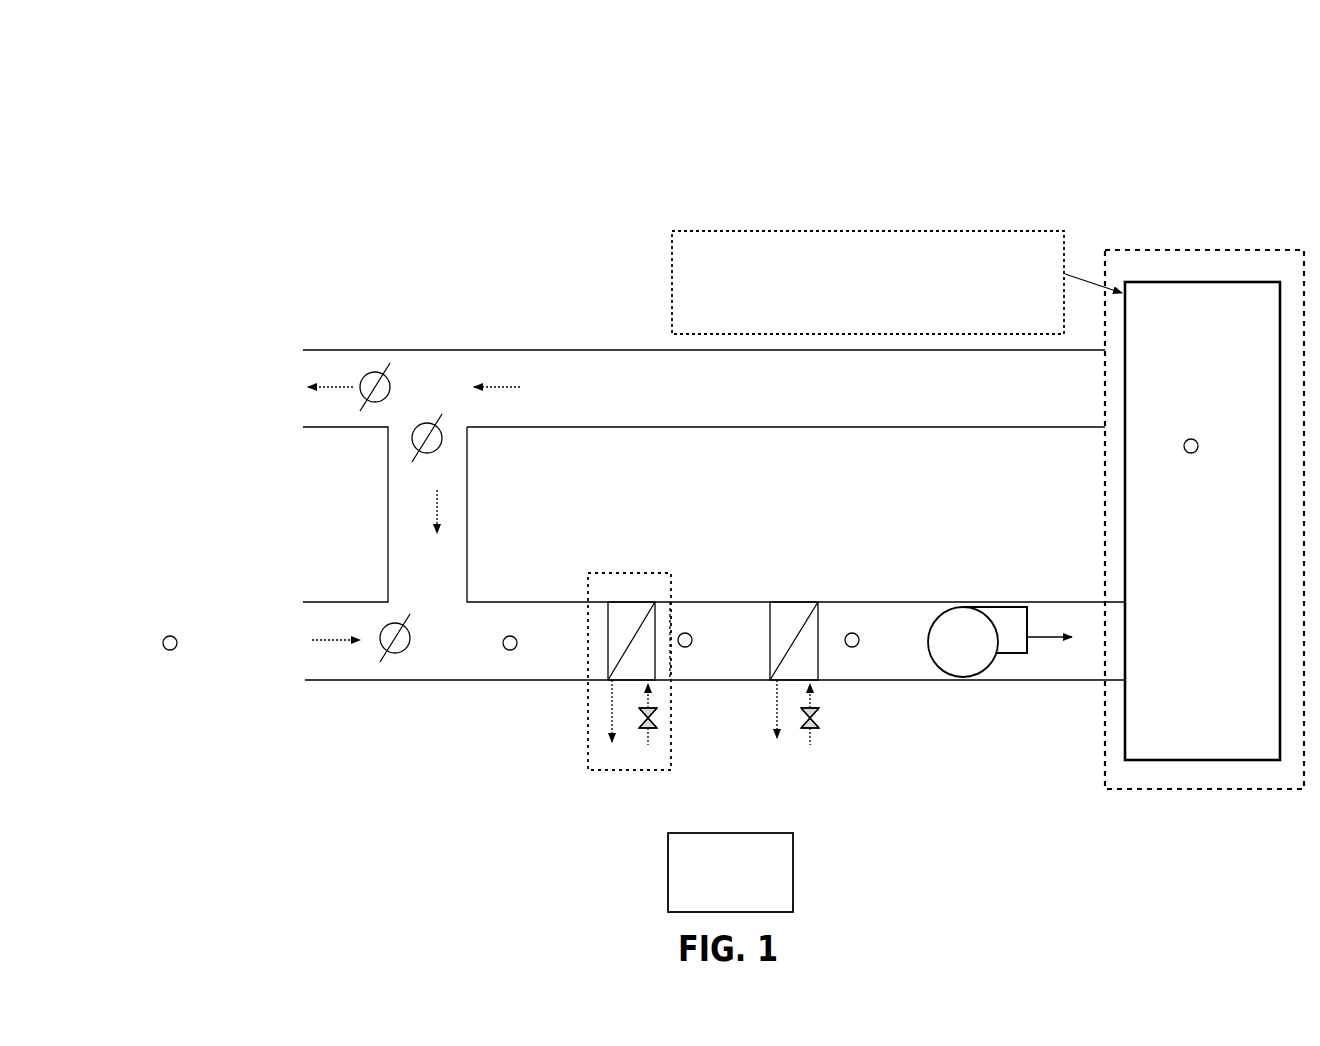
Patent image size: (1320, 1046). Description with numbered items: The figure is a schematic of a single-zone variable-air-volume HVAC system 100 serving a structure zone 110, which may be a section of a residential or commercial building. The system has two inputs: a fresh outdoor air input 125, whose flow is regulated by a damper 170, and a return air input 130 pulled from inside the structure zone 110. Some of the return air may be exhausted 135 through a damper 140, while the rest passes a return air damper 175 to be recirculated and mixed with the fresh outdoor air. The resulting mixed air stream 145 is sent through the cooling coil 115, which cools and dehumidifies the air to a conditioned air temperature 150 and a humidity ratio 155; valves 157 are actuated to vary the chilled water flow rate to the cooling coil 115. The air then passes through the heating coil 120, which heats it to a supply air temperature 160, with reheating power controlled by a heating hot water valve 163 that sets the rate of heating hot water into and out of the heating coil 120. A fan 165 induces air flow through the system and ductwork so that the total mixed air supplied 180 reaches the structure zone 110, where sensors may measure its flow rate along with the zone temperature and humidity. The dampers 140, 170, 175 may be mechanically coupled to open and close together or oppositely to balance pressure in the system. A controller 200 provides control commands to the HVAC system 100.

The HVAC system 100 is at (1089, 168).
The structure zone 110 is at (1240, 318).
The cooling coil 115 is at (640, 530).
The heating coil 120 is at (797, 555).
The fresh outdoor air input 125 is at (288, 683).
The return air input 130 is at (438, 481).
The exhausted return air 135 is at (288, 356).
The exhaust damper 140 is at (374, 362).
The mixed air stream 145 is at (473, 683).
The conditioned air temperature 150 is at (727, 603).
The humidity ratio 155 is at (743, 684).
The chilled water valves 157 is at (663, 719).
The supply air temperature 160 is at (890, 613).
The heating hot water valve 163 is at (825, 719).
The fan 165 is at (962, 604).
The outdoor air damper 170 is at (395, 668).
The return air damper 175 is at (443, 418).
The supplied air flow 180 is at (1077, 683).
The controller 200 is at (788, 857).